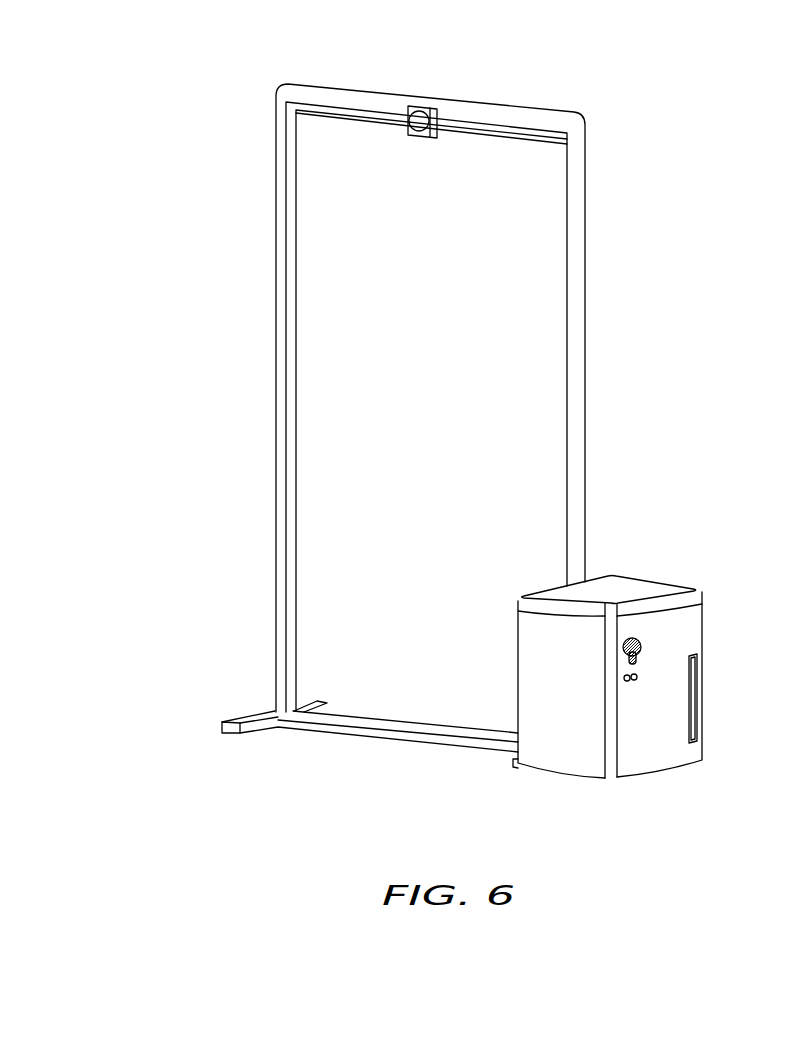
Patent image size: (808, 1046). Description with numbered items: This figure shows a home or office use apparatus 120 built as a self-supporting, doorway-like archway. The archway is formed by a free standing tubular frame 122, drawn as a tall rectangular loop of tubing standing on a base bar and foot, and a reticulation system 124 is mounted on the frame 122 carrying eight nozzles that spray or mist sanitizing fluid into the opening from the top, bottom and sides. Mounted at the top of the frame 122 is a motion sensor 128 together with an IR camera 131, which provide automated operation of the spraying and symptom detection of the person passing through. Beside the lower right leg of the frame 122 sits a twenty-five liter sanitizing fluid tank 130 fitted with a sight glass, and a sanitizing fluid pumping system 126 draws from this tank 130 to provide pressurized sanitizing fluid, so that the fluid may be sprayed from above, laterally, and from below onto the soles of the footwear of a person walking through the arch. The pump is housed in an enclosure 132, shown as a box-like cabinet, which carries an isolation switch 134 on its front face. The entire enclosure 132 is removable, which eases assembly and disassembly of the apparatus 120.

The home or office use apparatus 120 is at (230, 182).
The free standing tubular frame 122 is at (373, 100).
The reticulation system 124 is at (300, 154).
The sanitizing fluid pumping system 126 is at (641, 743).
The motion sensor 128 is at (422, 102).
The sanitizing fluid tank 130 is at (686, 561).
The IR camera 131 is at (444, 116).
The enclosure 132 is at (556, 755).
The isolation switch 134 is at (633, 617).